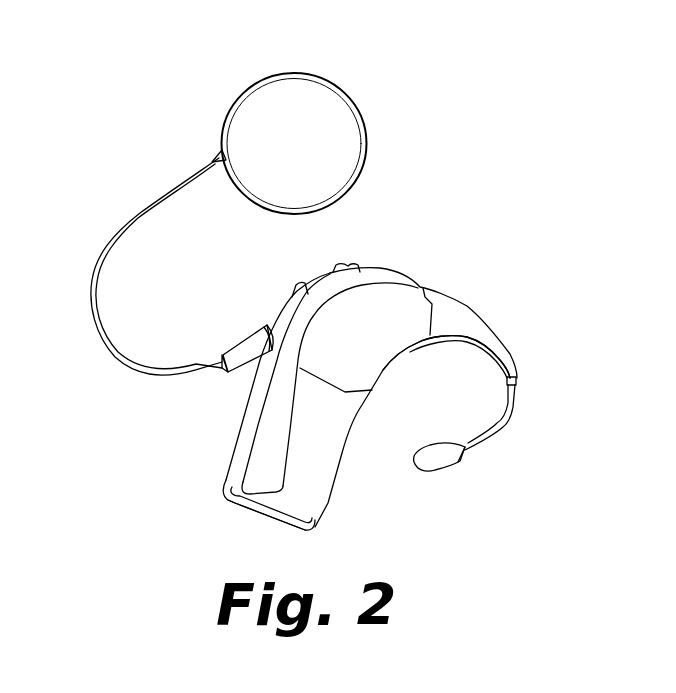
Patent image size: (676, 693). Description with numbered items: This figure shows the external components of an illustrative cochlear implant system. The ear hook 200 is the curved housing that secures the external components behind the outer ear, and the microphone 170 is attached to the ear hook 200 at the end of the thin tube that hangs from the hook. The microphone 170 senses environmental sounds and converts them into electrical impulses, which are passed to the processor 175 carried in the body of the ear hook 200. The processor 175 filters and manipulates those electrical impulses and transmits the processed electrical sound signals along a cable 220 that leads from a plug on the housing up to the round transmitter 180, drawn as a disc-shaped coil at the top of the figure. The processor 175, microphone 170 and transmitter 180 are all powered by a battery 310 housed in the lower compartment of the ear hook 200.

The transmitter 180 is at (298, 74).
The cable 220 is at (140, 213).
The ear hook 200 is at (452, 296).
The processor 175 is at (384, 368).
The microphone 170 is at (463, 463).
The battery 310 is at (328, 503).